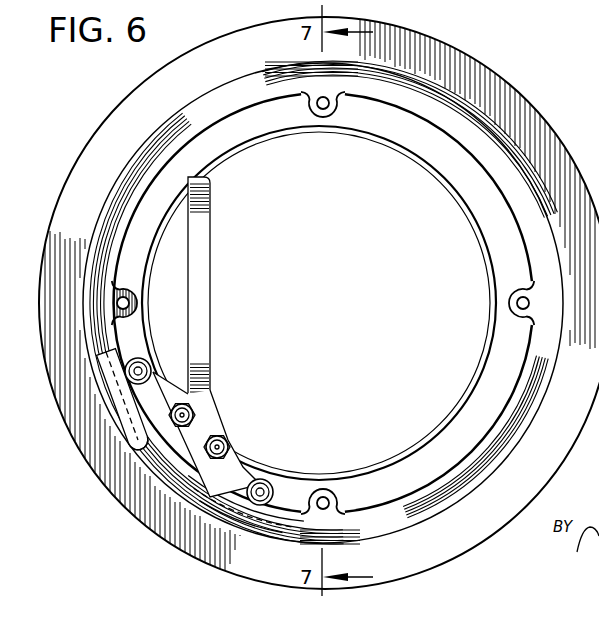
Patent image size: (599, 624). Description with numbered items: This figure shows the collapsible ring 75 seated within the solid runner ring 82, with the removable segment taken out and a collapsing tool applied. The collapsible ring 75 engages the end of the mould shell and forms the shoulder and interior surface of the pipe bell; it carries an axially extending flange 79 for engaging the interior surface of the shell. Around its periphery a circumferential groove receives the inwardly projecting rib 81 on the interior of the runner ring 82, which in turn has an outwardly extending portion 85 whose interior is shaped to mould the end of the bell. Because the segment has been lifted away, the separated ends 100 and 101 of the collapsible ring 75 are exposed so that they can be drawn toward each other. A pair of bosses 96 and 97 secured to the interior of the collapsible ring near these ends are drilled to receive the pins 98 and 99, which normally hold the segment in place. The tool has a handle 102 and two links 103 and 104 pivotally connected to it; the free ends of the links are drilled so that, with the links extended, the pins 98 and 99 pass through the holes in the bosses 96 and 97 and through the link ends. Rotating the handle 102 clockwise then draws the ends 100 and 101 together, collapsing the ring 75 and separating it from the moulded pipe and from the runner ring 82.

The collapsible ring 75 is at (250, 97).
The axially extending flange 79 is at (465, 200).
The inwardly projecting rib 81 is at (122, 182).
The solid runner ring 82 is at (497, 92).
The outwardly extending portion 85 is at (127, 117).
The boss 96 is at (121, 354).
The boss 97 is at (290, 472).
The pin 98 is at (133, 385).
The pin 99 is at (252, 500).
The separated end of the ring 100 is at (142, 446).
The separated end of the ring 101 is at (212, 458).
The handle 102 is at (203, 238).
The link 103 is at (175, 358).
The link 104 is at (237, 464).